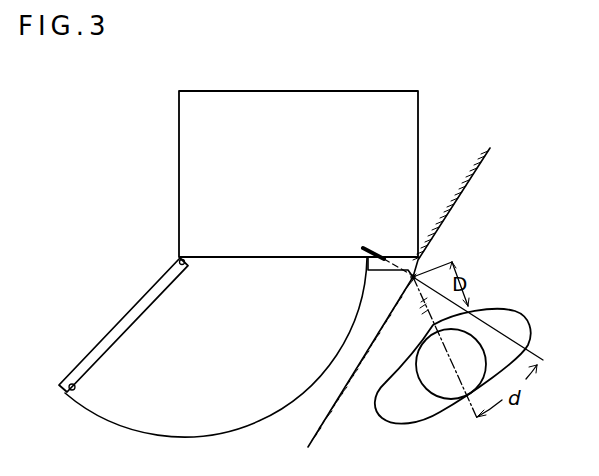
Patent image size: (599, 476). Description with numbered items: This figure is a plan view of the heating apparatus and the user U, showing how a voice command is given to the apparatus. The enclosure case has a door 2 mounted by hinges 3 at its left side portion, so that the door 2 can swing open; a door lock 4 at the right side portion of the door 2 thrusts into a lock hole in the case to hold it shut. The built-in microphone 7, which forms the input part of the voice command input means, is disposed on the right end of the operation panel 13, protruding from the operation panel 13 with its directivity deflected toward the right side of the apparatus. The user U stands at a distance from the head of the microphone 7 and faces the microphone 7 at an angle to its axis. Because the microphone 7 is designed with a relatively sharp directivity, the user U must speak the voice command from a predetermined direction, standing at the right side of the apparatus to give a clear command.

The door 2 is at (105, 345).
The hinges 3 is at (178, 260).
The door lock 4 is at (76, 389).
The microphone 7 is at (410, 278).
The operation panel 13 is at (419, 260).
The user U is at (520, 315).